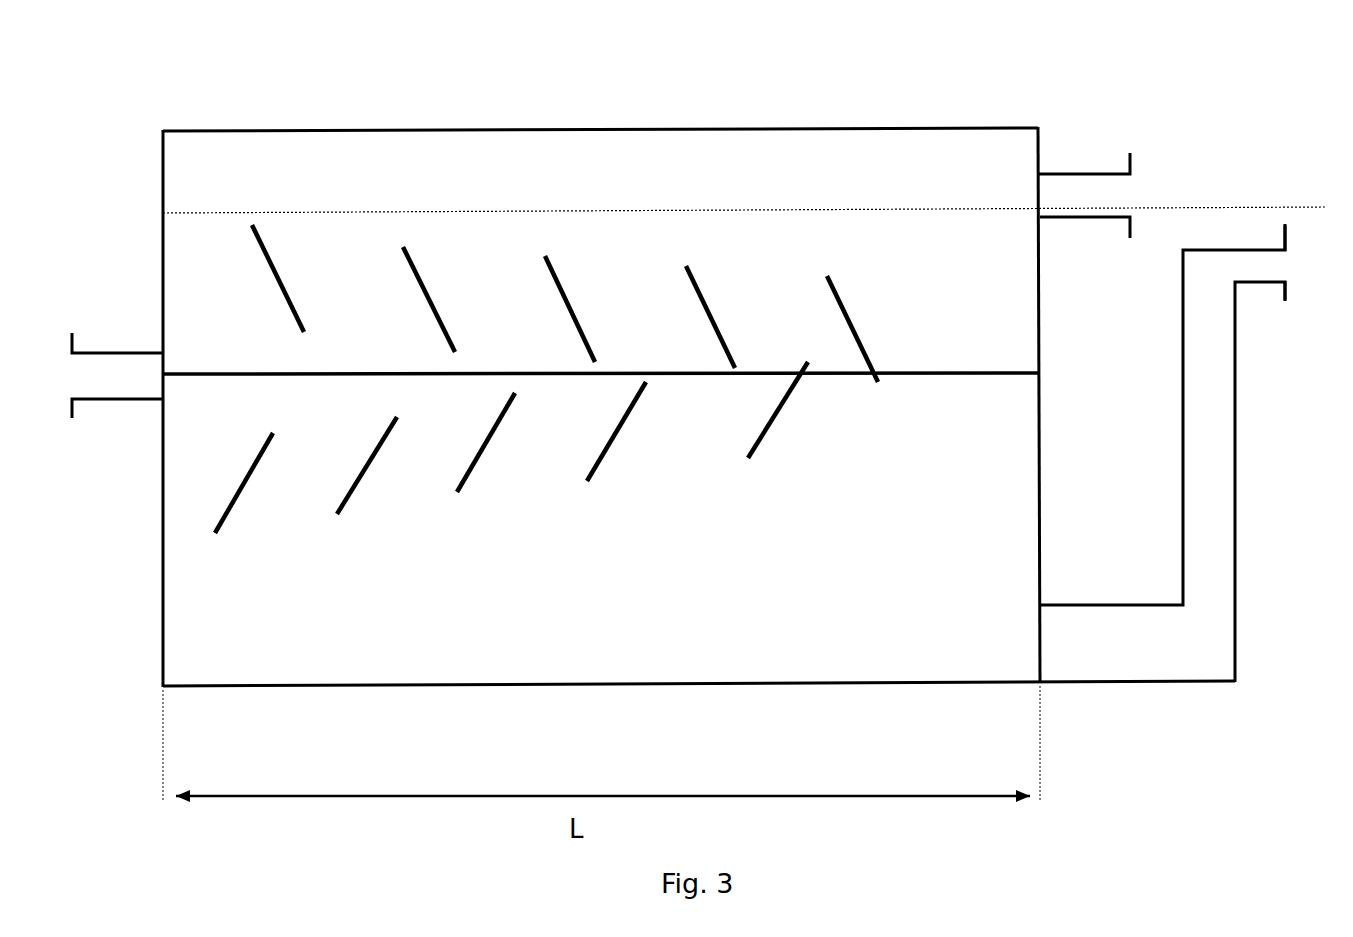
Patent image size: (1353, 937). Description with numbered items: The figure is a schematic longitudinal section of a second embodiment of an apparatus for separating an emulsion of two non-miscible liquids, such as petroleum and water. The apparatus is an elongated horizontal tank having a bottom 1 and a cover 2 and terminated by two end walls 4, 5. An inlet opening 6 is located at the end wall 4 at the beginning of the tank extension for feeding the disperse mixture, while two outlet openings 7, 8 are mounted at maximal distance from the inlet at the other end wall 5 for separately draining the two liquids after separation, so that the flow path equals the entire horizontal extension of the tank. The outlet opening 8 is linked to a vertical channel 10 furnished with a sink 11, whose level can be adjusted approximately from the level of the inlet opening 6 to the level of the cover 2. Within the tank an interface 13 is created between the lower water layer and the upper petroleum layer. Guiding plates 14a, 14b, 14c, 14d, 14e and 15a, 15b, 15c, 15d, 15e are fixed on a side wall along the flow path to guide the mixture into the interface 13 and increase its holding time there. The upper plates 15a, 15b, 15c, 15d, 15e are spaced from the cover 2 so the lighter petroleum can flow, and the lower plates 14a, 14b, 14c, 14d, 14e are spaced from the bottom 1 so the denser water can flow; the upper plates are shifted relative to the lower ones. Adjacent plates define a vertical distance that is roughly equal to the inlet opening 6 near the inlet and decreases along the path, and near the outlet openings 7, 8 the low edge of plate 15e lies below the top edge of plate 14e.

The bottom 1 is at (699, 419).
The cover 2 is at (699, 356).
The end wall 4 is at (126, 408).
The end wall 5 is at (1087, 379).
The inlet opening 6 is at (117, 414).
The outlet opening 7 is at (1125, 162).
The outlet opening 8 is at (1162, 497).
The vertical channel 10 is at (1278, 482).
The sink 11 is at (1303, 294).
The interface 13 is at (542, 491).
The guiding plate 14a is at (277, 500).
The guiding plate 14b is at (395, 492).
The guiding plate 14c is at (505, 480).
The guiding plate 14d is at (634, 475).
The guiding plate 14e is at (788, 465).
The guiding plate 15a is at (316, 262).
The guiding plate 15b is at (457, 272).
The guiding plate 15c is at (597, 276).
The guiding plate 15d is at (739, 279).
The guiding plate 15e is at (877, 286).